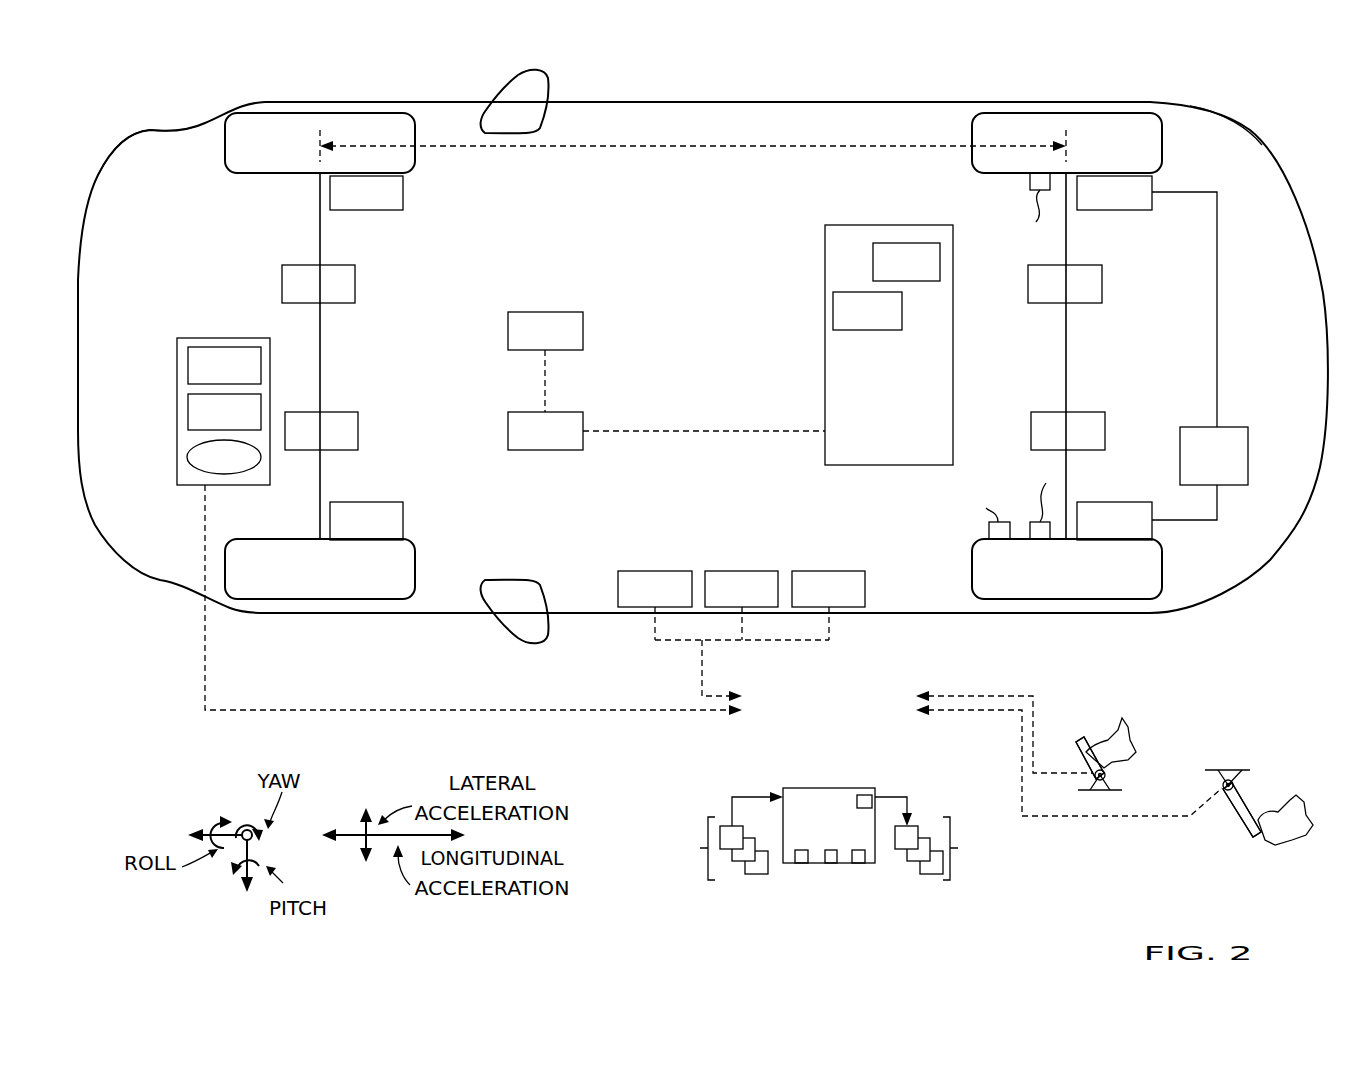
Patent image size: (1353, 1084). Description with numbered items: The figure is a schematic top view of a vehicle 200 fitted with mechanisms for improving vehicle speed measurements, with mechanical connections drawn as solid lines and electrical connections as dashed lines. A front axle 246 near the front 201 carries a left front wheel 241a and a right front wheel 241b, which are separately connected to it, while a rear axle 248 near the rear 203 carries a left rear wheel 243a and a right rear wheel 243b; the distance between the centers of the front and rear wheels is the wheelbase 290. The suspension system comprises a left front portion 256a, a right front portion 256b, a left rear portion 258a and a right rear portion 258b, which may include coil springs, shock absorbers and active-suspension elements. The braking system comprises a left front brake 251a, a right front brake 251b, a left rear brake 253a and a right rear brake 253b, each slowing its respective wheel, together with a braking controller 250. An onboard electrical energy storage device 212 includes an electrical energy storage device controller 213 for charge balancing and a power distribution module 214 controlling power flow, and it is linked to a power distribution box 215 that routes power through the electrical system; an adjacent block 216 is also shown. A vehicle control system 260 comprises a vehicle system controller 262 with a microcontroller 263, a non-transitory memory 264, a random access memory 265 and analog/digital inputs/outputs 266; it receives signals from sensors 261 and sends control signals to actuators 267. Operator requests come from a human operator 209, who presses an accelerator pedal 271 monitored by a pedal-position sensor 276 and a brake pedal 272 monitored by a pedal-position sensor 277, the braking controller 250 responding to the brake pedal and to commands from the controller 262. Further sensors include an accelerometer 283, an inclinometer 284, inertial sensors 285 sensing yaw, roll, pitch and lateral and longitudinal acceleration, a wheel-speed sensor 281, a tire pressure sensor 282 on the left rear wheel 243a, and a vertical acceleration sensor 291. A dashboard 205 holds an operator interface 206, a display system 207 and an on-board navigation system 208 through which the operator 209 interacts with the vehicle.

The vehicle 200 is at (808, 82).
The front 201 is at (167, 127).
The rear 203 is at (1232, 122).
The dashboard 205 is at (230, 337).
The operator interface 206 is at (224, 457).
The display system 207 is at (224, 412).
The on-board navigation system 208 is at (224, 365).
The human operator 209 is at (1107, 728).
The onboard electrical energy storage device 212 is at (889, 345).
The electrical energy storage device controller 213 is at (867, 311).
The power distribution module 214 is at (906, 262).
The power distribution box 215 is at (666, 431).
The charger 216 is at (545, 362).
The left front wheel 241a is at (333, 598).
The right front wheel 241b is at (333, 113).
The left rear wheel 243a is at (1078, 598).
The right rear wheel 243b is at (1078, 113).
The front axle 246 is at (340, 356).
The rear axle 248 is at (1088, 355).
The braking controller 250 is at (1200, 356).
The left front brake 251a is at (366, 521).
The right front brake 251b is at (366, 193).
The left rear brake 253a is at (1114, 521).
The right rear brake 253b is at (1114, 193).
The left front portion of front suspension 256a is at (321, 431).
The right front portion of front suspension 256b is at (318, 284).
The left rear portion of rear suspension 258a is at (1068, 431).
The right rear portion of rear suspension 258b is at (1065, 284).
The vehicle control system 260 is at (710, 775).
The sensors 261 is at (701, 836).
The vehicle system controller 262 is at (829, 825).
The microcontroller 263 is at (802, 858).
The non-transitory memory 264 is at (830, 863).
The random access memory 265 is at (860, 858).
The analog/digital inputs/outputs 266 is at (864, 800).
The actuators 267 is at (963, 838).
The accelerator pedal 271 is at (1092, 770).
The brake pedal 272 is at (1240, 808).
The pedal-position sensor 276 is at (1108, 773).
The pedal-position sensor 277 is at (1222, 782).
The wheel-speed sensor 281 is at (1033, 500).
The tire pressure sensor 282 is at (1005, 512).
The accelerometer 283 is at (655, 605).
The inclinometer 284 is at (741, 605).
The inertial sensors 285 is at (828, 605).
The wheelbase 290 is at (918, 162).
The vertical acceleration sensor 291 is at (1026, 213).